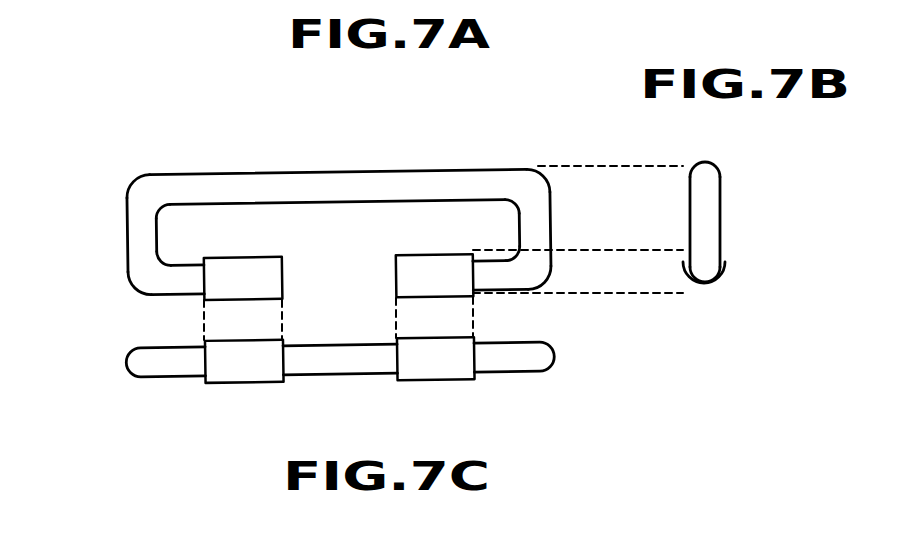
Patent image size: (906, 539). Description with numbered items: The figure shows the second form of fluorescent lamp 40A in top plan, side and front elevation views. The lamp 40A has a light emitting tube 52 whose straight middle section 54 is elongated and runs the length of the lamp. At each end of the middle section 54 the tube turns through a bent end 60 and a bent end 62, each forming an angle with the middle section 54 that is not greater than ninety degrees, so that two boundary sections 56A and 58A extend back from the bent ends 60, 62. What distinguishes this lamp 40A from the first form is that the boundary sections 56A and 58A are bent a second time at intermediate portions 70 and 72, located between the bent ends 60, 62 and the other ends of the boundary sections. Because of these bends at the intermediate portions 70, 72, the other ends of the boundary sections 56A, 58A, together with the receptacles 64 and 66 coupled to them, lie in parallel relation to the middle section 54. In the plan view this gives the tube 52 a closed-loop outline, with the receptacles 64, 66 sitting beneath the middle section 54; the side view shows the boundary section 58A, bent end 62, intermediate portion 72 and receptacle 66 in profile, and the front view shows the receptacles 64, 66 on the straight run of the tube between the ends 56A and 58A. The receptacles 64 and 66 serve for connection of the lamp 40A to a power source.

In FIG. 7A, the fluorescent lamp 40A is at (229, 146).
In FIG. 7A, the light emitting tube 52 is at (331, 168).
In FIG. 7A, the straight middle section 54 is at (400, 168).
In FIG. 7C, the straight middle section 54 is at (334, 378).
In FIG. 7A, the boundary section 56A is at (127, 229).
In FIG. 7C, the boundary section 56A is at (153, 380).
In FIG. 7A, the boundary section 58A is at (553, 222).
In FIG. 7B, the boundary section 58A is at (716, 214).
In FIG. 7C, the boundary section 58A is at (510, 378).
In FIG. 7A, the bent end 60 is at (131, 181).
In FIG. 7A, the bent end 62 is at (558, 170).
In FIG. 7B, the bent end 62 is at (704, 160).
In FIG. 7A, the receptacle 64 is at (240, 257).
In FIG. 7C, the receptacle 64 is at (246, 385).
In FIG. 7A, the receptacle 66 is at (430, 255).
In FIG. 7B, the receptacle 66 is at (705, 293).
In FIG. 7C, the receptacle 66 is at (438, 383).
In FIG. 7A, the intermediate portion 70 is at (133, 293).
In FIG. 7A, the intermediate portion 72 is at (543, 282).
In FIG. 7B, the intermediate portion 72 is at (706, 272).